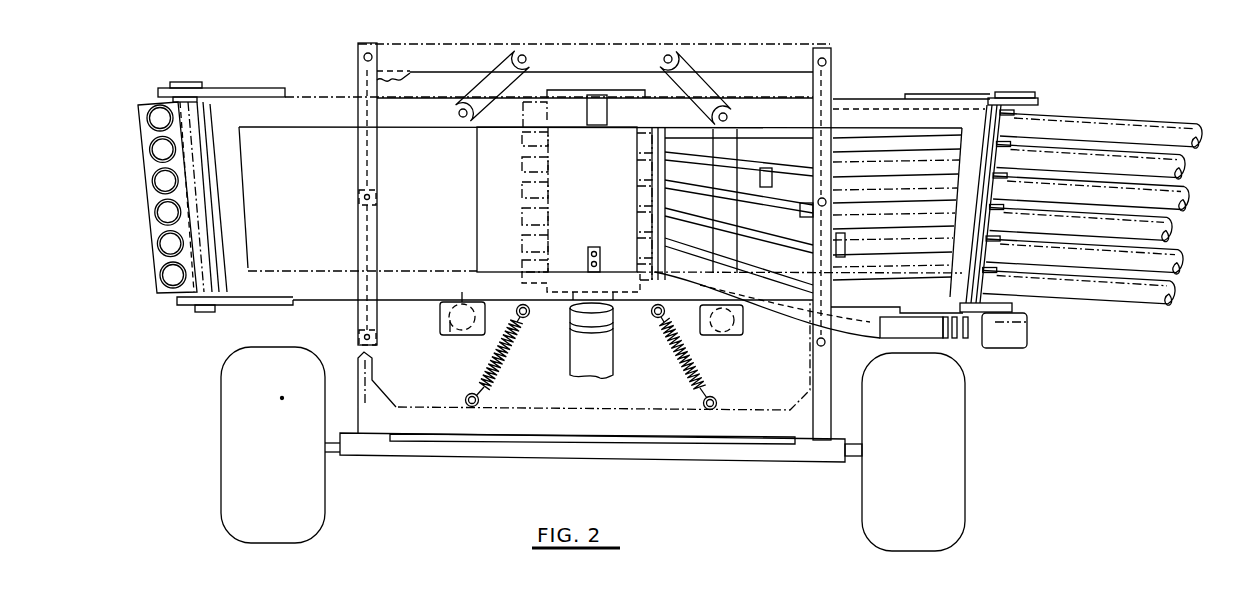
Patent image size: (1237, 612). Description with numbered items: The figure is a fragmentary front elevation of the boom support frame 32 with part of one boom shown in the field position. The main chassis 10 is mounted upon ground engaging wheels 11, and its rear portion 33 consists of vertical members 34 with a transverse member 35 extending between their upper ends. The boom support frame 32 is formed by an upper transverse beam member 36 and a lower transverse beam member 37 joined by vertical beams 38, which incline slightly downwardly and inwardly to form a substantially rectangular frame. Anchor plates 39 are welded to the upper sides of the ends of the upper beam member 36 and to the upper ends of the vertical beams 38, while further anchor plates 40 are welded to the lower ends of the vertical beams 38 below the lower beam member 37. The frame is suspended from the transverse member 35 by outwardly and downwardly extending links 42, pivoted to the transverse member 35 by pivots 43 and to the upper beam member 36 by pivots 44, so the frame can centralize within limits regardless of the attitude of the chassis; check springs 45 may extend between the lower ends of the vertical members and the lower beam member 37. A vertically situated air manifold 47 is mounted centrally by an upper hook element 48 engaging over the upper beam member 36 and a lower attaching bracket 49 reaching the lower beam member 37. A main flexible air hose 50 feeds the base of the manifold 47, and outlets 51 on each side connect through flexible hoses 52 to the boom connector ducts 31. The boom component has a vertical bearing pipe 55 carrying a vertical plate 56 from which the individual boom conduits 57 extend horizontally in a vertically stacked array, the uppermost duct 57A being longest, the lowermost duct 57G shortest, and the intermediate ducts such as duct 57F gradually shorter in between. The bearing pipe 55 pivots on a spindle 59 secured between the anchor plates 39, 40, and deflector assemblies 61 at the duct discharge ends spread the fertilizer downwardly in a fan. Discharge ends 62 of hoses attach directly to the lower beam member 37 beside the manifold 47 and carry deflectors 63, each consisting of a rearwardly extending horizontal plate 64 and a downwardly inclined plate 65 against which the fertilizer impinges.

The main chassis 10 is at (440, 430).
The ground engaging wheels 11 is at (230, 402).
The boom connector ducts 31 is at (778, 147).
The boom support frame 32 is at (197, 52).
The rear portion of the support framework 33 is at (830, 97).
The vertical members 34 is at (833, 58).
The transverse member 35 is at (455, 50).
The upper transverse beam member 36 is at (388, 120).
The lower transverse beam member 37 is at (285, 270).
The vertical beams 38 is at (233, 205).
The anchor plates 39 is at (250, 88).
The further anchor plates 40 is at (275, 305).
The links 42 is at (690, 72).
The pivots 43 is at (527, 47).
The pivots 44 is at (459, 112).
The check springs 45 is at (505, 365).
The air manifold 47 is at (548, 145).
The upper hook element 48 is at (600, 115).
The lower attaching bracket 49 is at (597, 250).
The main flexible air hose 50 is at (605, 355).
The outlets 51 is at (528, 192).
The flexible hoses 52 is at (652, 190).
The vertical bearing pipe 55 is at (200, 165).
The vertical plate 56 is at (158, 268).
The individual boom conduits 57 is at (160, 247).
The uppermost duct 57A is at (1125, 128).
The boom duct 57F is at (1135, 300).
The lowermost duct 57G is at (940, 338).
The spindle 59 is at (198, 312).
The deflector assemblies 61 is at (1010, 355).
The discharge ends of the hoses 62 is at (446, 315).
The deflectors 63 is at (460, 340).
The horizontal plate 64 is at (462, 298).
The inclined plate 65 is at (452, 330).